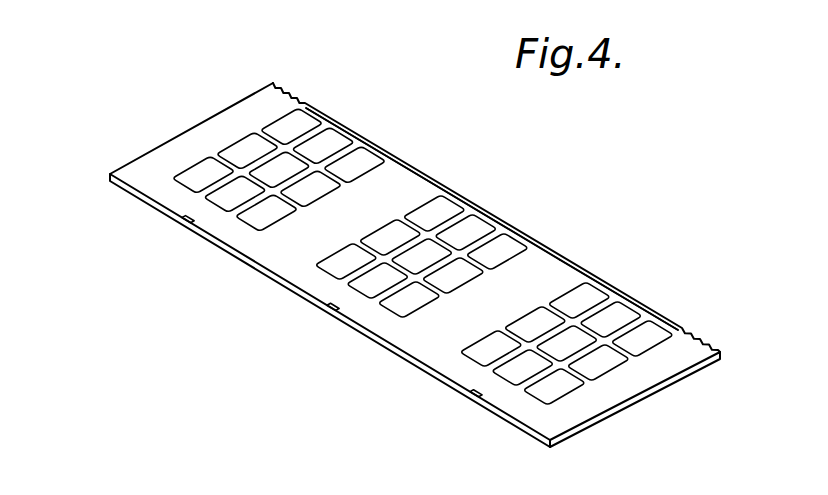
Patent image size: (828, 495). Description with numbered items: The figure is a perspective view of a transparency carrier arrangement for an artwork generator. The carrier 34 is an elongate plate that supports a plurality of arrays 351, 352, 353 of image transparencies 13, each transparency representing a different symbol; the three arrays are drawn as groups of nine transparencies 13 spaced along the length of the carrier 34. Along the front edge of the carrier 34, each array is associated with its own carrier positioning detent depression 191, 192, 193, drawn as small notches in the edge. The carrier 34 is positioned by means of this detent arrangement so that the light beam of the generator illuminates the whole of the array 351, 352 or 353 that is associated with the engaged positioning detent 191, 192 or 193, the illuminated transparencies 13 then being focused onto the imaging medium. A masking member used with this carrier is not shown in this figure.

The image transparencies 13 is at (540, 372).
The carrier 34 is at (305, 102).
The array of transparencies 351 is at (634, 298).
The array of transparencies 352 is at (497, 216).
The array of transparencies 353 is at (350, 133).
The carrier positioning detent depression 191 is at (473, 402).
The carrier positioning detent depression 192 is at (332, 315).
The carrier positioning detent depression 193 is at (185, 227).